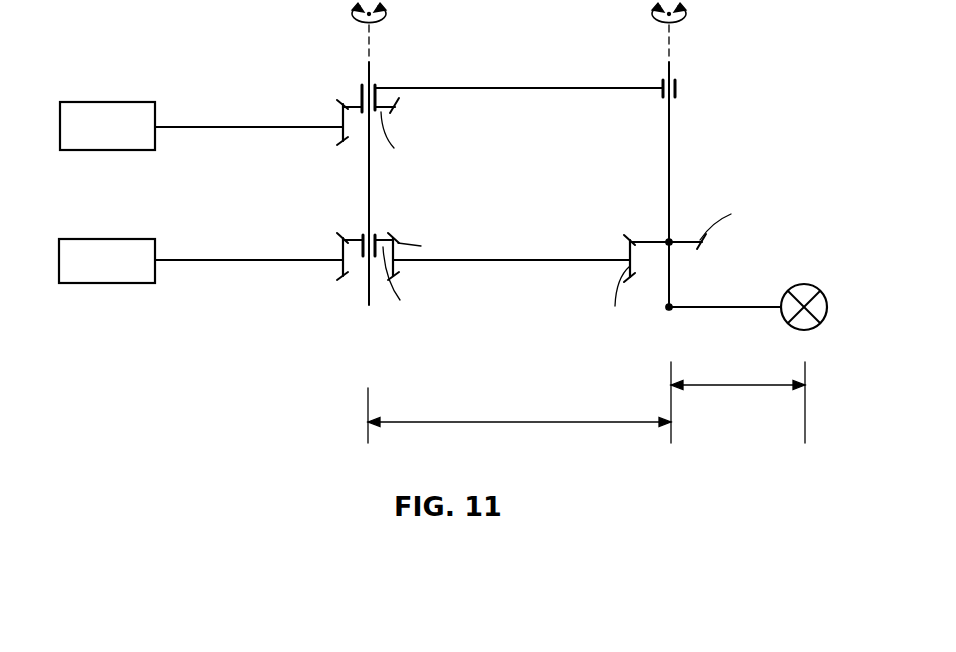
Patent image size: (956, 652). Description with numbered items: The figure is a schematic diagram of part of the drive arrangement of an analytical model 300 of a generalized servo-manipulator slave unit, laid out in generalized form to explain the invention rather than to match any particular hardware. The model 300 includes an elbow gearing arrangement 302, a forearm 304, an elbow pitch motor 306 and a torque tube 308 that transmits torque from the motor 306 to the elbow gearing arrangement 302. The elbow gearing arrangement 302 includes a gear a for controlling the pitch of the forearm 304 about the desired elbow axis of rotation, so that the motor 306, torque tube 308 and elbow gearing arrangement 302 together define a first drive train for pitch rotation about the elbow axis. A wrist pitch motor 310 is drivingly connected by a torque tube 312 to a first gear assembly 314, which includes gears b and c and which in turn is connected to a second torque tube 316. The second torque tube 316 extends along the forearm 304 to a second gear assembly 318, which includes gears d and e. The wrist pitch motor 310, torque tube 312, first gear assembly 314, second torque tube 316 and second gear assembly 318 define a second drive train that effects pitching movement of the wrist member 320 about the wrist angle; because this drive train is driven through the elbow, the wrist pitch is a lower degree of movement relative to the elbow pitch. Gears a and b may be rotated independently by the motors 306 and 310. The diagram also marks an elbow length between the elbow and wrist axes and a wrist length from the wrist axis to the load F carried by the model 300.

The analytical model 300 is at (160, 375).
The elbow gearing arrangement 302 is at (347, 77).
The forearm 304 is at (545, 88).
The elbow pitch motor 306 is at (118, 125).
The torque tube 308 is at (183, 125).
The wrist pitch motor 310 is at (88, 258).
The torque tube 312 is at (258, 258).
The first gear assembly 314 is at (388, 223).
The second torque tube 316 is at (483, 258).
The second gear assembly 318 is at (695, 215).
The wrist member 320 is at (712, 307).
The load F is at (800, 285).